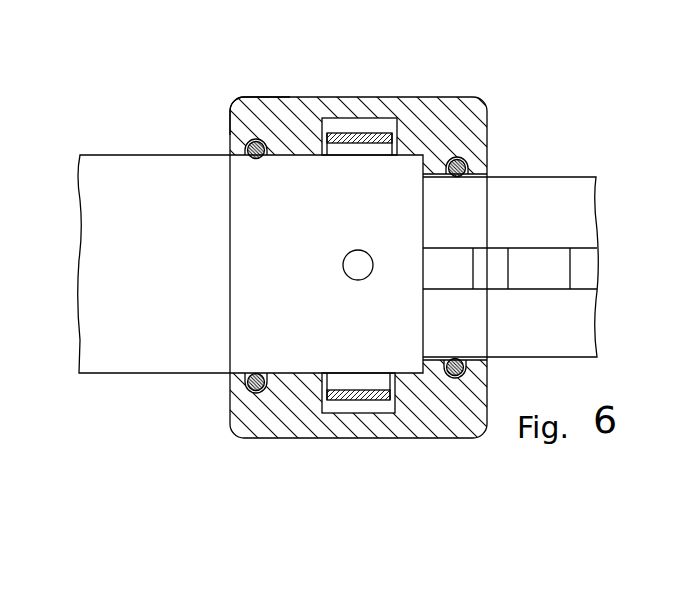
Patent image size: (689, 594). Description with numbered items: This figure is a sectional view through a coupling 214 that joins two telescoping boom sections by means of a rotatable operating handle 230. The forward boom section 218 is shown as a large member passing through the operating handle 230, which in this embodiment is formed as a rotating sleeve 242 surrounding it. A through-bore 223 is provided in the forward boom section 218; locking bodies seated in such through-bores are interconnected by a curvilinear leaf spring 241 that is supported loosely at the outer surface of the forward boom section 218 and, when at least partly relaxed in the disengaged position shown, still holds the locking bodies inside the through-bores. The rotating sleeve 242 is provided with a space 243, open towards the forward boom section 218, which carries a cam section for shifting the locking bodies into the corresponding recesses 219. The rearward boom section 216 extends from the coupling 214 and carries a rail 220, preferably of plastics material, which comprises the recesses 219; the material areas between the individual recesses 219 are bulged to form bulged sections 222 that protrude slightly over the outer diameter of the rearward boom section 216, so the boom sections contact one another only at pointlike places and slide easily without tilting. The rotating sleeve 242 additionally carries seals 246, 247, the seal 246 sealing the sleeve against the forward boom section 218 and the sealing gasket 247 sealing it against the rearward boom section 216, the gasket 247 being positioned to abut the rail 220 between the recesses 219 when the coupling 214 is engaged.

The coupling 214 is at (353, 97).
The rearward boom section 216 is at (523, 188).
The forward boom section 218 is at (105, 362).
The recesses 219 is at (493, 282).
The rail 220 is at (587, 268).
The bulged sections 222 is at (552, 282).
The through-bore 223 is at (345, 267).
The operating handle 230 is at (472, 100).
The curvilinear leaf spring 241 is at (402, 128).
The rotating sleeve 242 is at (247, 103).
The space 243 is at (375, 408).
The seal 246 is at (250, 147).
The sealing gasket 247 is at (462, 168).